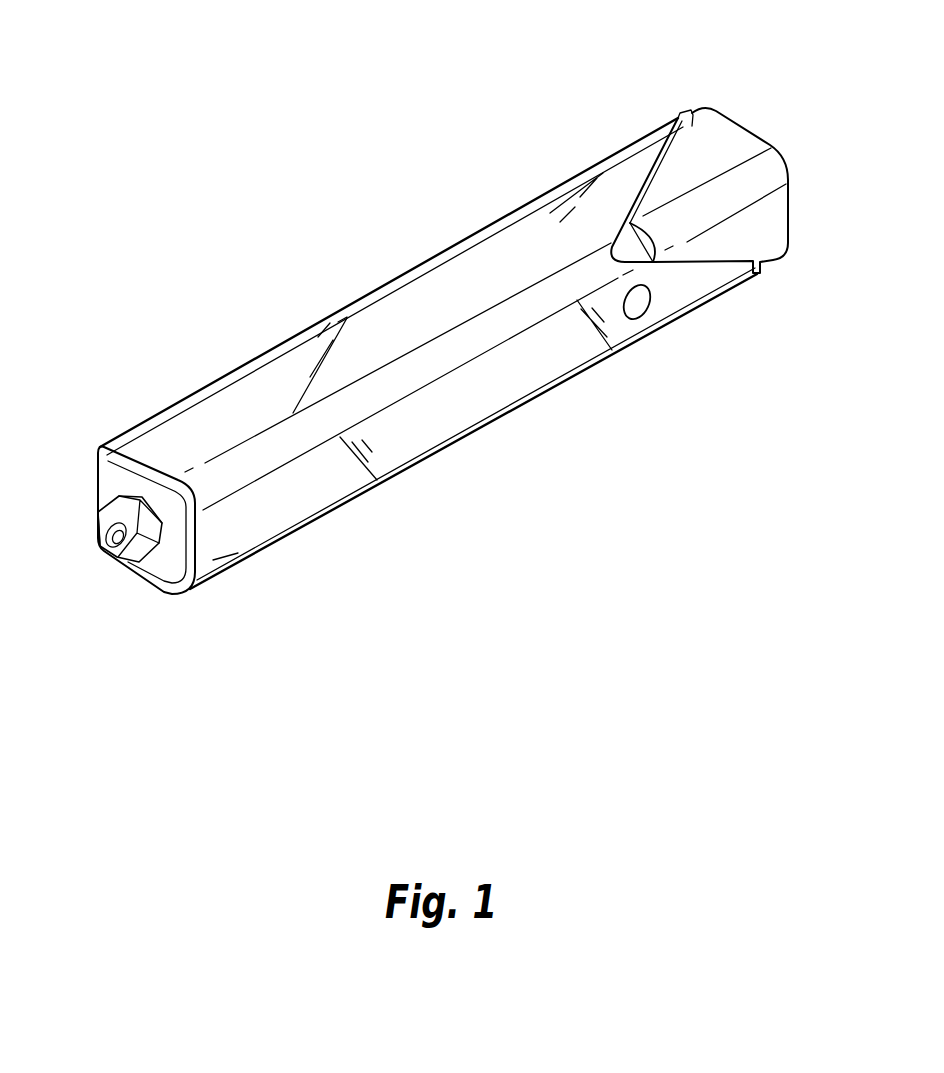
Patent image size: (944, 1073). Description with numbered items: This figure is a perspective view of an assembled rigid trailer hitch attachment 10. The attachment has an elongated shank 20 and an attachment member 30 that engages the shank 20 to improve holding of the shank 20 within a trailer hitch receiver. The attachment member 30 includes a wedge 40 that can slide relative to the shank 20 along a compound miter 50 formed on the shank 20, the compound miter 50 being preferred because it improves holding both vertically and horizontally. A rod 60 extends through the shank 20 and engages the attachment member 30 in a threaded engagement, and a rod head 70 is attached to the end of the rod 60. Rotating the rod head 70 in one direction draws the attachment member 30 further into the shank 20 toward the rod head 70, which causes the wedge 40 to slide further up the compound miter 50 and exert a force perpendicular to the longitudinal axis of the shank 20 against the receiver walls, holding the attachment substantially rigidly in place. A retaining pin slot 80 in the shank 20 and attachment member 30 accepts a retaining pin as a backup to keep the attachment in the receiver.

The rigid trailer hitch attachment 10 is at (268, 256).
The shank 20 is at (485, 262).
The attachment member 30 is at (779, 154).
The wedge 40 is at (697, 210).
The compound miter 50 is at (652, 180).
The rod 60 is at (117, 536).
The rod head 70 is at (152, 540).
The retaining pin slot 80 is at (633, 298).